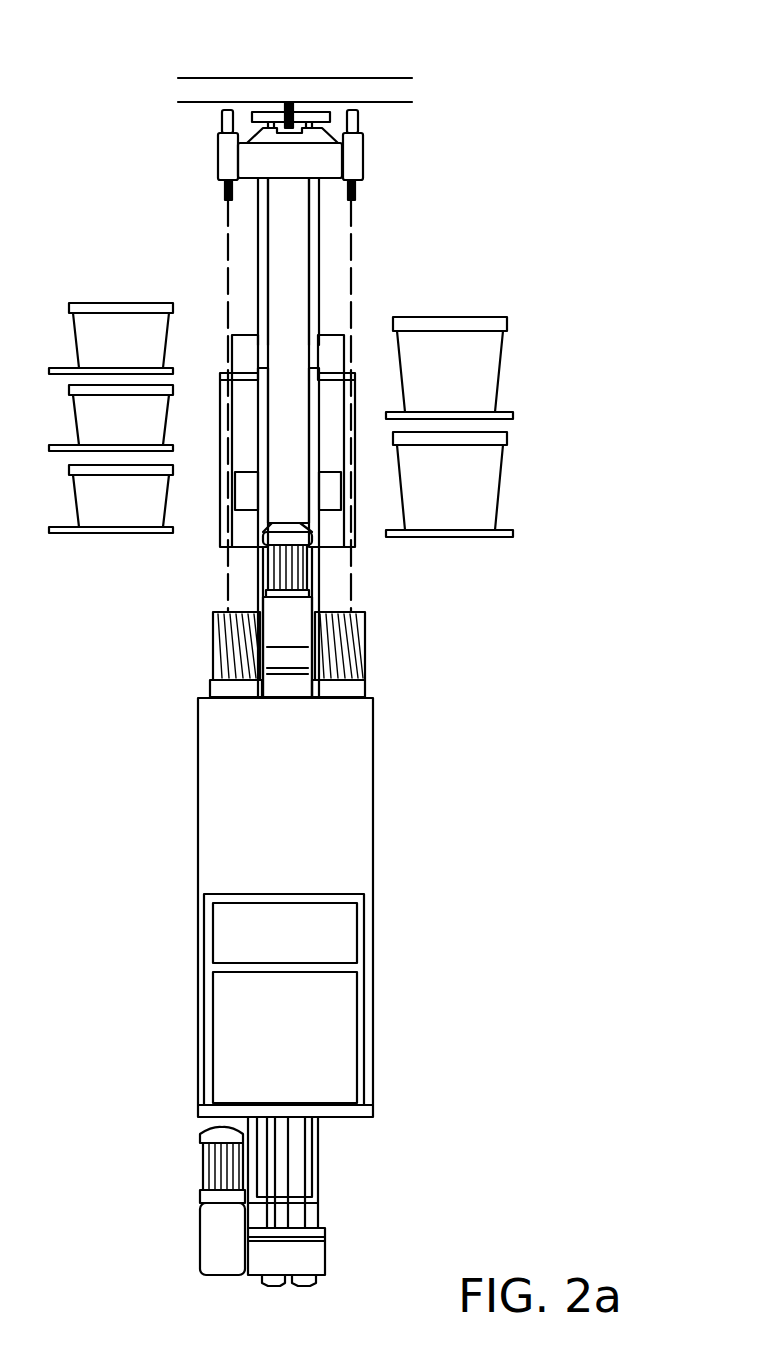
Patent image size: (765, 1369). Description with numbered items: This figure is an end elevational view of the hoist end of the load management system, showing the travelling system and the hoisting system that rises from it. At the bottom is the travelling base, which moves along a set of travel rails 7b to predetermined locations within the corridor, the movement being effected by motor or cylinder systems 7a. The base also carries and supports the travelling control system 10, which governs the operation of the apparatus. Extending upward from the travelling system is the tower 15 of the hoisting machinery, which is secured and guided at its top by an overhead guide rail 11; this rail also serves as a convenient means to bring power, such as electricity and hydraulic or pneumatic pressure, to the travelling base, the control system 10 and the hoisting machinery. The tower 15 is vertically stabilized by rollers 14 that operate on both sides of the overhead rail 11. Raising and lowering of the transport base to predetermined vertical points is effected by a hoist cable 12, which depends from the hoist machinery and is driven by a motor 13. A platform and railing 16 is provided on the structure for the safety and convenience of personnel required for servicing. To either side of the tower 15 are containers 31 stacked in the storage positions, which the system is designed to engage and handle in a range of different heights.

The motor or cylinder systems 7a is at (207, 1165).
The travel rails 7b is at (315, 1201).
The travelling control system 10 is at (338, 736).
The overhead guide rail 11 is at (292, 110).
The hoist cable 12 is at (232, 238).
The motor 13 is at (292, 572).
The rollers 14 is at (277, 116).
The tower 15 is at (292, 305).
The platform and railing 16 is at (363, 926).
The containers 31 is at (281, 420).